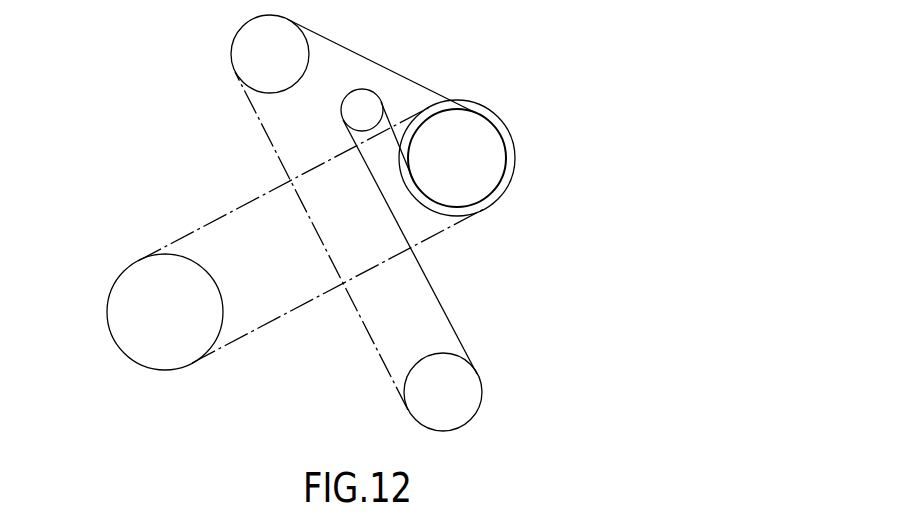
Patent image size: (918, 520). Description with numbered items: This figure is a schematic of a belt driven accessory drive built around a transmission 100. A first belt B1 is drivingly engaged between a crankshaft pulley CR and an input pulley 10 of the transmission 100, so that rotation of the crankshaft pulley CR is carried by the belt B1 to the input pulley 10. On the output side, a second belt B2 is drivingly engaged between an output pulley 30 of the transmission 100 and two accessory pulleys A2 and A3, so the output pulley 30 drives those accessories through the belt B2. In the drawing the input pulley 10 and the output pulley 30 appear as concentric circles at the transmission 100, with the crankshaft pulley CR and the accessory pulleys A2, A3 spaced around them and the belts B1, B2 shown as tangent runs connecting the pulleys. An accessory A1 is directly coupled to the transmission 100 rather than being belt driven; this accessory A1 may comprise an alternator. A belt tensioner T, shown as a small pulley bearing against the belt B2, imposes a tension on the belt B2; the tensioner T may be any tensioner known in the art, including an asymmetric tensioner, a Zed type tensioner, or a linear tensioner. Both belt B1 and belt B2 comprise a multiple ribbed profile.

The transmission 100 is at (518, 120).
The input pulley 10 is at (517, 172).
The output pulley 30 is at (423, 198).
The accessory A1 is at (523, 158).
The accessory pulley A2 is at (243, 30).
The accessory pulley A3 is at (469, 421).
The belt B1 is at (240, 339).
The belt B2 is at (386, 369).
The crankshaft pulley CR is at (117, 350).
The belt tensioner T is at (362, 109).